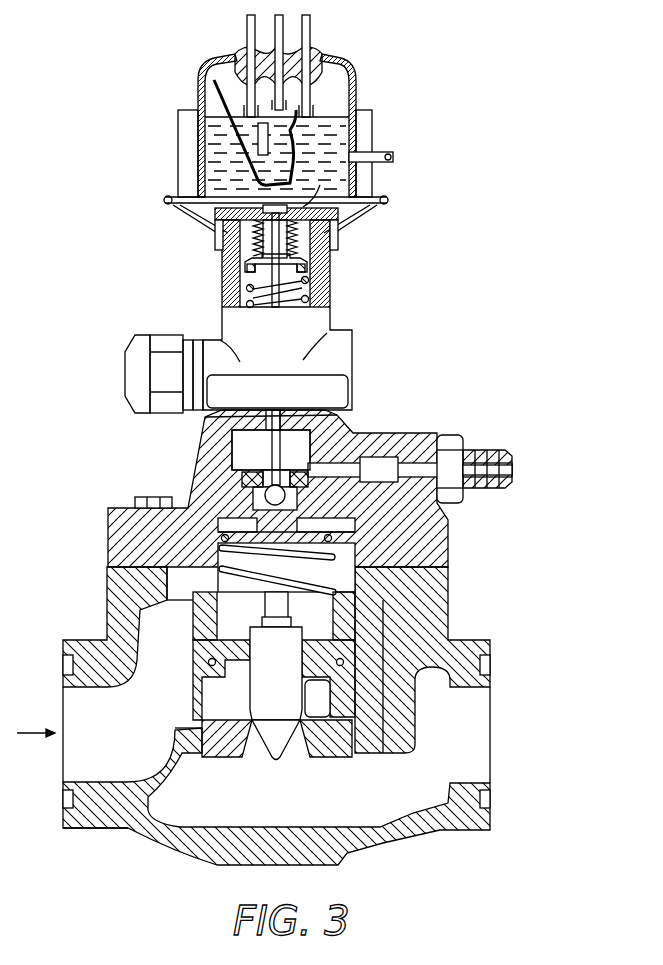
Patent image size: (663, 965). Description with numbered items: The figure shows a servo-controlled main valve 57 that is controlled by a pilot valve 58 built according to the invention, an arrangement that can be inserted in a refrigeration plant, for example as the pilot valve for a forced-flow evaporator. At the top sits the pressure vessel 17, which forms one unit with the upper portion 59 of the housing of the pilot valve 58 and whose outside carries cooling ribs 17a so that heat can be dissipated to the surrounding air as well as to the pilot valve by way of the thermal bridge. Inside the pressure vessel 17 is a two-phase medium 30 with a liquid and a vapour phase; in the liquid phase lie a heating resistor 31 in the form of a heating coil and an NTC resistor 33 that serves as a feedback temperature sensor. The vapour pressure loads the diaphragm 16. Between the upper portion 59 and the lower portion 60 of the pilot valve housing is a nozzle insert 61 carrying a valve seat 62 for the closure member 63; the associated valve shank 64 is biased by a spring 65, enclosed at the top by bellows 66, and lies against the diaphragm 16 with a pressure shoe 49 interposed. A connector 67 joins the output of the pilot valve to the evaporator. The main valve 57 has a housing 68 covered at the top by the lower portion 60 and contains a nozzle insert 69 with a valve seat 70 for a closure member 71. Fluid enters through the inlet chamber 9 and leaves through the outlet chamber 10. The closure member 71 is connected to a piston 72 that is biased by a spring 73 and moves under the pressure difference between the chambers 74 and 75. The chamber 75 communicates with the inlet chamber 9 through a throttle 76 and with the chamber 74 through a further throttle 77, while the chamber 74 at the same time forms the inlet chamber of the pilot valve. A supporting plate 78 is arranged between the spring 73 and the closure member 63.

The inlet chamber 9 is at (93, 740).
The outlet chamber 10 is at (477, 740).
The diaphragm 16 is at (303, 207).
The pressure vessel 17 is at (362, 90).
The cooling ribs 17a is at (192, 110).
The two-phase medium 30 is at (330, 133).
The heating resistor 31 is at (243, 160).
The NTC resistor 33 is at (258, 145).
The pressure shoe 49 is at (327, 240).
The servo-controlled main valve 57 is at (157, 850).
The pilot valve 58 is at (362, 403).
The upper portion of the housing 59 is at (230, 273).
The lower portion of the housing 60 is at (440, 530).
The nozzle insert 61 is at (253, 417).
The valve seat 62 is at (257, 487).
The closure member 63 is at (265, 470).
The valve shank 64 is at (277, 277).
The spring 65 is at (243, 288).
The bellows 66 is at (258, 240).
The connector 67 is at (507, 470).
The housing 68 is at (110, 815).
The nozzle insert 69 is at (160, 593).
The valve seat 70 is at (230, 720).
The closure member 71 is at (275, 735).
The piston 72 is at (180, 627).
The spring 73 is at (304, 558).
The chamber 74 is at (160, 580).
The chamber 75 is at (305, 667).
The throttle 76 is at (353, 650).
The throttle 77 is at (305, 638).
The supporting plate 78 is at (243, 540).